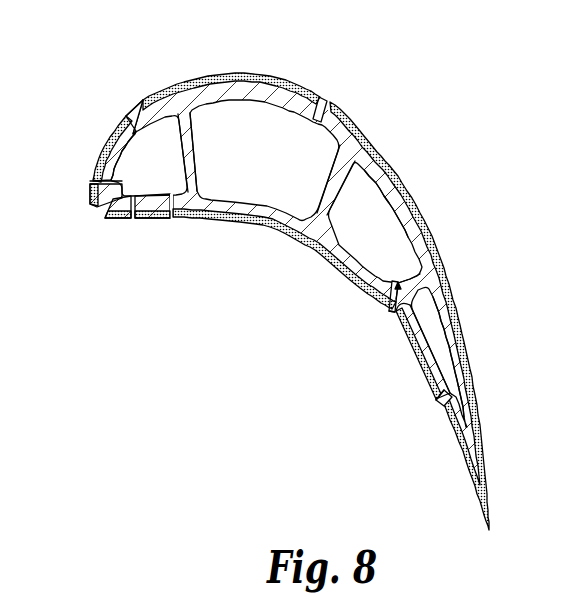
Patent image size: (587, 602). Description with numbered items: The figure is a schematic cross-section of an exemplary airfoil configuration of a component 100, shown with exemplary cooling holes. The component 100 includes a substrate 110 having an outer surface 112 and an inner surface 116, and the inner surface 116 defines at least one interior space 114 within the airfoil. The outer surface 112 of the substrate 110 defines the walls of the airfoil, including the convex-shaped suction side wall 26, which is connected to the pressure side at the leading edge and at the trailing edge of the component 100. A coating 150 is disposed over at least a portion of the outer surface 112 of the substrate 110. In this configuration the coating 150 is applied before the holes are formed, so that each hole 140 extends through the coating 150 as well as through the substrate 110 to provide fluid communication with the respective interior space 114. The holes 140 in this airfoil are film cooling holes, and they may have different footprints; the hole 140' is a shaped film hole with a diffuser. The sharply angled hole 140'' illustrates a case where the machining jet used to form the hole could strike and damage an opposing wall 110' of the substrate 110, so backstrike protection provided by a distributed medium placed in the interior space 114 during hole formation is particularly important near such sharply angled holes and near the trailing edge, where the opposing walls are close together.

The component 100 is at (508, 83).
The substrate 110 is at (301, 238).
The opposing wall 110' is at (436, 235).
The outer surface 112 is at (444, 352).
The interior space 114 is at (428, 317).
The inner surface 116 is at (382, 199).
The hole 140 is at (231, 241).
The shaped cooling hole 140' is at (100, 95).
The sharply angled hole 140'' is at (357, 331).
The coating 150 is at (190, 83).
The suction side wall 26 is at (337, 269).